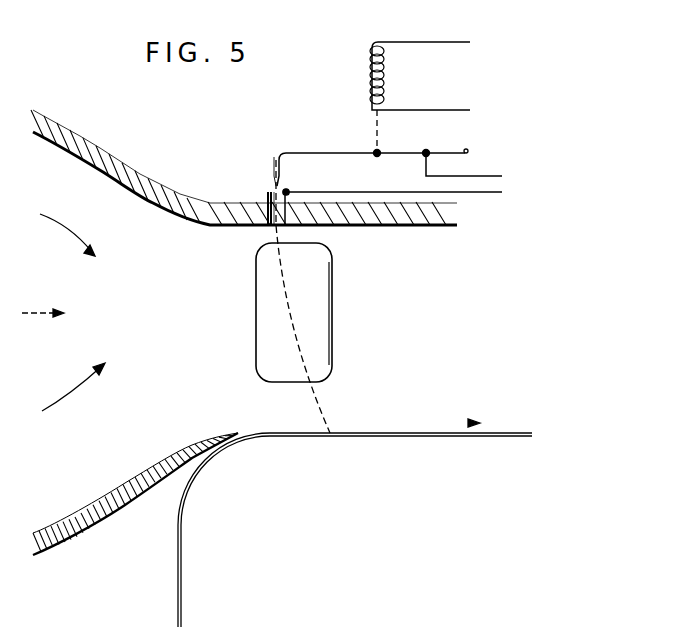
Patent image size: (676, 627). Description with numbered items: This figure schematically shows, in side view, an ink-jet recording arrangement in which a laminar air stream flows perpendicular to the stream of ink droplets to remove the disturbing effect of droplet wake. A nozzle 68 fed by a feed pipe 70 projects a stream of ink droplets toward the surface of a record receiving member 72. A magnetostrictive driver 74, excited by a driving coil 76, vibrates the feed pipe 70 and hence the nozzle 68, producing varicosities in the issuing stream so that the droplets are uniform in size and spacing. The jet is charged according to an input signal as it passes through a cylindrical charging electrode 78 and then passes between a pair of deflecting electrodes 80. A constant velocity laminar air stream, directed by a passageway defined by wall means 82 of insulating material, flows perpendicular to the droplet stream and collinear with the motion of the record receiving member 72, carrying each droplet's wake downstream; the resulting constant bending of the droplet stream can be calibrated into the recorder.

The nozzle 68 is at (281, 173).
The feed pipe 70 is at (312, 152).
The record receiving member 72 is at (372, 437).
The magnetostrictive driver 74 is at (380, 136).
The driving coil 76 is at (383, 80).
The cylindrical charging electrode 78 is at (266, 192).
The deflecting electrodes 80 is at (310, 300).
The wall means 82 is at (138, 182).